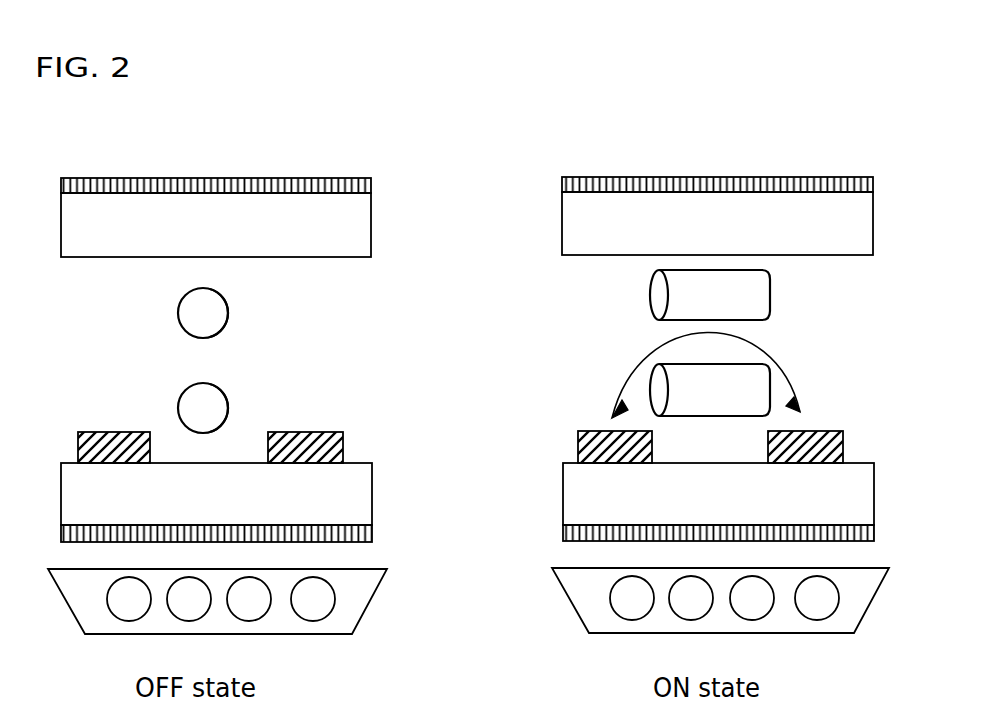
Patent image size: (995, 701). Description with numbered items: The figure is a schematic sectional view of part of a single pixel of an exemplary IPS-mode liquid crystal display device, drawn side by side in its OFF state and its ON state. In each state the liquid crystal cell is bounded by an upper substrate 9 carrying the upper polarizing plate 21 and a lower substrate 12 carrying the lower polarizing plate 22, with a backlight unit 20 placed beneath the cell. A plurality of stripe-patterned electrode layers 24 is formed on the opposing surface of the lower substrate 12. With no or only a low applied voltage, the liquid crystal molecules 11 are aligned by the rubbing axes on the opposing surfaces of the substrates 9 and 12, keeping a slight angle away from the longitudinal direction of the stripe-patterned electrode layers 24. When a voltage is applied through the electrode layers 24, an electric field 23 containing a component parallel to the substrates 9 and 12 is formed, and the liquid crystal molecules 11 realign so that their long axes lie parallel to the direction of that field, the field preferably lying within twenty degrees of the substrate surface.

The upper substrate of liquid crystal cell 9 is at (563, 243).
The upper polarizing plate 21 is at (553, 185).
The liquid crystal molecule 11 is at (645, 305).
The direction of applied electric field 23 is at (635, 362).
The stripe-patterned electrode 24 is at (575, 440).
The lower substrate of liquid crystal cell 12 is at (563, 503).
The lower polarizing plate 22 is at (563, 541).
The backlight unit 20 is at (568, 609).